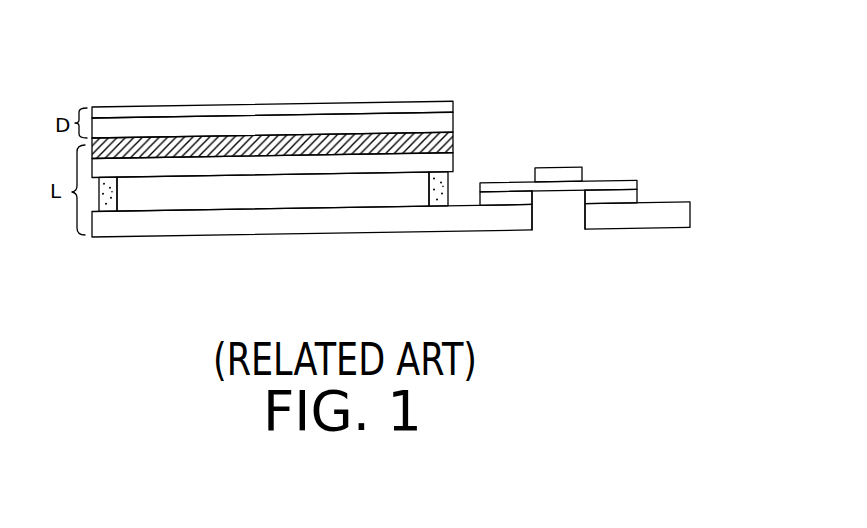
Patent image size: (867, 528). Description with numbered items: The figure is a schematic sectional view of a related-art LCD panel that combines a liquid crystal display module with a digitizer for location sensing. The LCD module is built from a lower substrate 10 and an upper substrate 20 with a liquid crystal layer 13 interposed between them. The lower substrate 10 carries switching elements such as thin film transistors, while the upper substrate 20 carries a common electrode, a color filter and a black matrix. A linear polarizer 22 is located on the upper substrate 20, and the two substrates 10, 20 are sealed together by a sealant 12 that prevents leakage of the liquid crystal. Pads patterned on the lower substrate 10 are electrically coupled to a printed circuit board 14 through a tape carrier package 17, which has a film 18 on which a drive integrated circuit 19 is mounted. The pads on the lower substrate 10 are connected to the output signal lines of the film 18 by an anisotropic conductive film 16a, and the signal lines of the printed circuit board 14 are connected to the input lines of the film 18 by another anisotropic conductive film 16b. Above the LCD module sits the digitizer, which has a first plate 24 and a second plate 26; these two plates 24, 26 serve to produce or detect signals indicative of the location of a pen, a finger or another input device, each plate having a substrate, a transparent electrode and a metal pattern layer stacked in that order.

The lower substrate 10 is at (365, 233).
The sealant 12 is at (118, 197).
The liquid crystal layer 13 is at (243, 201).
The printed circuit board 14 is at (633, 228).
The anisotropic conductive film 16a is at (514, 188).
The anisotropic conductive film 16b is at (617, 187).
The tape carrier package 17 is at (585, 152).
The film 18 is at (558, 193).
The drive integrated circuit 19 is at (563, 167).
The upper substrate 20 is at (453, 162).
The linear polarizer 22 is at (453, 142).
The first plate 24 is at (453, 127).
The second plate 26 is at (410, 100).